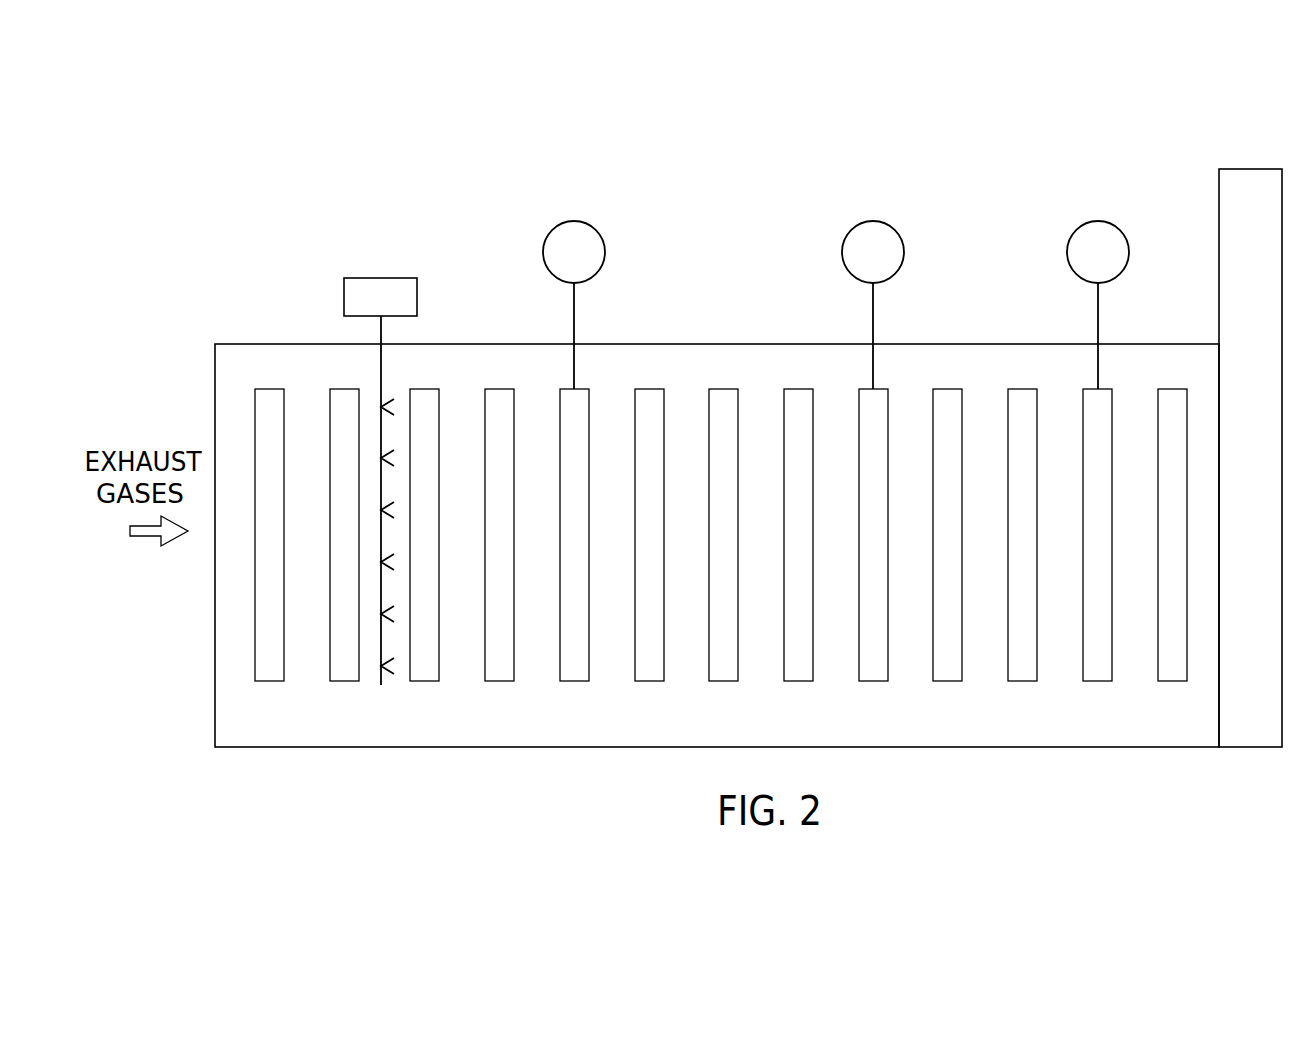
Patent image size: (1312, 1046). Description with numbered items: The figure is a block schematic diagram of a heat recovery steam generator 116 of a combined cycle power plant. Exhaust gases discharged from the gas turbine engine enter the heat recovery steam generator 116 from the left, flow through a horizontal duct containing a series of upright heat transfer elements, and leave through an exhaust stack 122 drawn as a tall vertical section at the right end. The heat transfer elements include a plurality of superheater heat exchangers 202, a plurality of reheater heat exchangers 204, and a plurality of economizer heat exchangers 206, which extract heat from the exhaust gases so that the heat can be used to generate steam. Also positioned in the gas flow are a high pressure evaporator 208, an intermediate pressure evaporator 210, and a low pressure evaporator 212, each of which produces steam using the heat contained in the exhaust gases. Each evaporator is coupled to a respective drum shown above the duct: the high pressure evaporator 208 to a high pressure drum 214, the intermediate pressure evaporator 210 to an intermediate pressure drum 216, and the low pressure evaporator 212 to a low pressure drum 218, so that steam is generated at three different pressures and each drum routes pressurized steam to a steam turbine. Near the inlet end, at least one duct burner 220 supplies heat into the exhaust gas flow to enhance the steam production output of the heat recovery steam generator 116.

The heat recovery steam generator 116 is at (481, 150).
The exhaust stack 122 is at (1250, 169).
The superheater heat exchanger 202 is at (270, 681).
The reheater heat exchanger 204 is at (345, 681).
The economizer heat exchanger 206 is at (724, 681).
The high pressure evaporator 208 is at (575, 681).
The intermediate pressure evaporator 210 is at (874, 681).
The low pressure evaporator 212 is at (1098, 681).
The high pressure drum 214 is at (575, 221).
The intermediate pressure drum 216 is at (873, 221).
The low pressure drum 218 is at (1098, 222).
The duct burner 220 is at (393, 278).